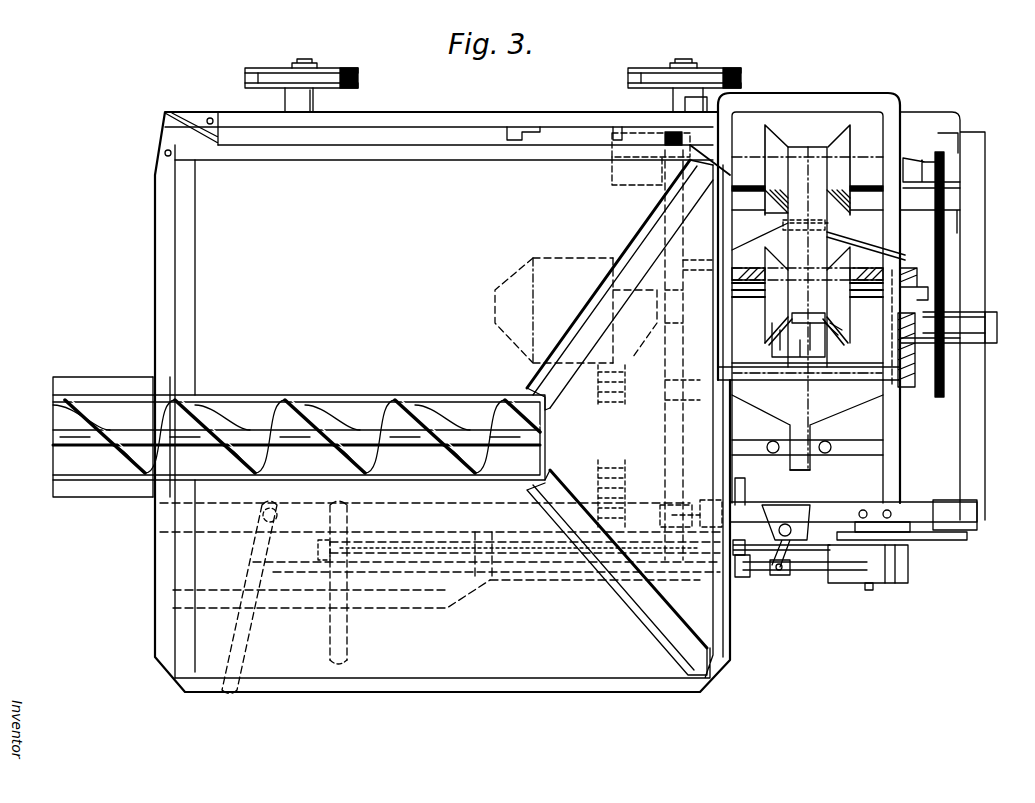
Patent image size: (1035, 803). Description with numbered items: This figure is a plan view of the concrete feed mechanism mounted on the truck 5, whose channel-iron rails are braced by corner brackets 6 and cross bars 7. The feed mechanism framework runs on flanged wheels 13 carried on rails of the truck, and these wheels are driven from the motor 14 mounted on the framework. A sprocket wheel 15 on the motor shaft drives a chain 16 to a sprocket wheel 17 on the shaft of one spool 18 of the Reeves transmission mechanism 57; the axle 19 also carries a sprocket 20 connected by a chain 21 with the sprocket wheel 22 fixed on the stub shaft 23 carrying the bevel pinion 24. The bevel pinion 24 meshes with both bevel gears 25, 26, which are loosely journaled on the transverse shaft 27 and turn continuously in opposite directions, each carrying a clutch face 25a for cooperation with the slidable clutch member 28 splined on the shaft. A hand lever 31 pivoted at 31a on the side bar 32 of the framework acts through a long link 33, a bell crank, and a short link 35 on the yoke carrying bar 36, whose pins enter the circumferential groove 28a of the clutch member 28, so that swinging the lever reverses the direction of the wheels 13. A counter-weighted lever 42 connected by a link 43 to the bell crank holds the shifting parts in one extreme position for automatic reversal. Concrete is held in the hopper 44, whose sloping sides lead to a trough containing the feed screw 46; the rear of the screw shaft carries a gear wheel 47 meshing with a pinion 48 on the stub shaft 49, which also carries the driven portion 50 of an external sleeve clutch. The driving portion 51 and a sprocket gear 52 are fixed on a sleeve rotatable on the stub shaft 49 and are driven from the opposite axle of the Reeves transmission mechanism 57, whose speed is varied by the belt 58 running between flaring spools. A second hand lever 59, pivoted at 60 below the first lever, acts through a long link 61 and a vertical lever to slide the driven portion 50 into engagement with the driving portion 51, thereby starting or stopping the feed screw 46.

The truck 5 is at (574, 125).
The corner brackets 6 is at (955, 130).
The cross bars 7 is at (512, 138).
The flanged wheels 13 is at (343, 75).
The motor 14 is at (556, 256).
The sprocket wheel 15 is at (650, 347).
The chain 16 is at (620, 285).
The sprocket wheel 17 is at (650, 205).
The spool 18 is at (765, 128).
The axle 19 is at (866, 155).
The sprocket 20 is at (946, 170).
The chain 21 is at (945, 262).
The sprocket wheel 22 is at (948, 320).
The stub shaft 23 is at (1002, 320).
The bevel pinion 24 is at (905, 388).
The bevel gear 25 is at (870, 252).
The clutch face 25a is at (760, 220).
The bevel gear 26 is at (772, 357).
The transverse shaft 27 is at (805, 470).
The slidable clutch member 28 is at (815, 343).
The circumferential groove 28a is at (857, 343).
The hand lever 31 is at (236, 632).
The pivot 31a is at (326, 503).
The side bar 32 is at (262, 510).
The long link 33 is at (527, 572).
The short link 35 is at (793, 575).
The yoke carrying bar 36 is at (760, 322).
The counter-weighted lever 42 is at (855, 575).
The link 43 is at (815, 572).
The hopper 44 is at (563, 658).
The feed screw 46 is at (65, 437).
The gear wheel 47 is at (626, 405).
The pinion 48 is at (628, 500).
The stub shaft 49 is at (678, 502).
The driven portion of clutch 50 is at (748, 500).
The driving portion of clutch 51 is at (738, 560).
The sprocket gear 52 is at (700, 560).
The Reeves transmission mechanism 57 is at (808, 150).
The belt 58 is at (825, 228).
The hand lever 59 is at (348, 645).
The pivot 60 is at (352, 506).
The long link 61 is at (428, 545).